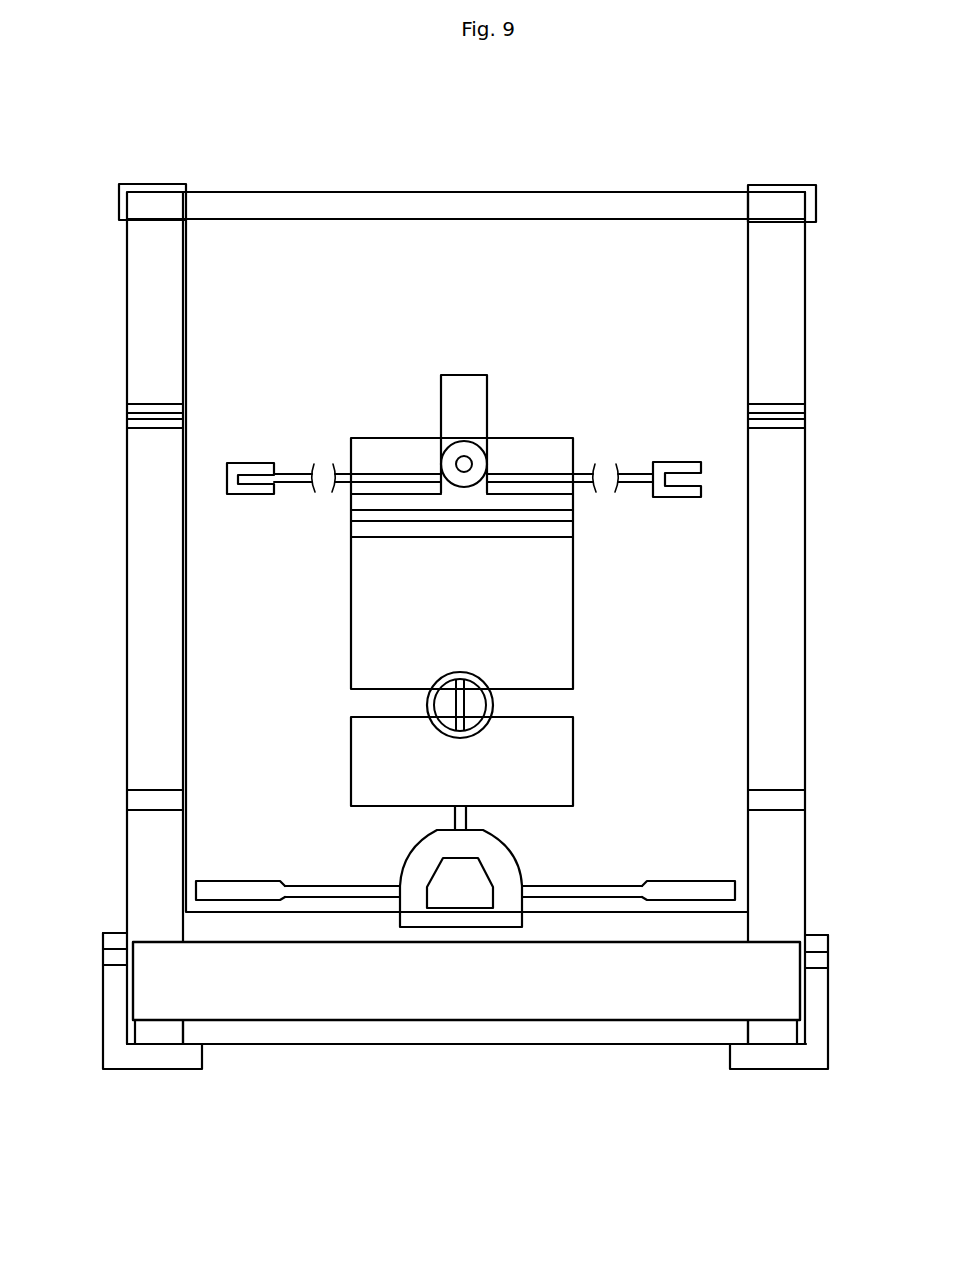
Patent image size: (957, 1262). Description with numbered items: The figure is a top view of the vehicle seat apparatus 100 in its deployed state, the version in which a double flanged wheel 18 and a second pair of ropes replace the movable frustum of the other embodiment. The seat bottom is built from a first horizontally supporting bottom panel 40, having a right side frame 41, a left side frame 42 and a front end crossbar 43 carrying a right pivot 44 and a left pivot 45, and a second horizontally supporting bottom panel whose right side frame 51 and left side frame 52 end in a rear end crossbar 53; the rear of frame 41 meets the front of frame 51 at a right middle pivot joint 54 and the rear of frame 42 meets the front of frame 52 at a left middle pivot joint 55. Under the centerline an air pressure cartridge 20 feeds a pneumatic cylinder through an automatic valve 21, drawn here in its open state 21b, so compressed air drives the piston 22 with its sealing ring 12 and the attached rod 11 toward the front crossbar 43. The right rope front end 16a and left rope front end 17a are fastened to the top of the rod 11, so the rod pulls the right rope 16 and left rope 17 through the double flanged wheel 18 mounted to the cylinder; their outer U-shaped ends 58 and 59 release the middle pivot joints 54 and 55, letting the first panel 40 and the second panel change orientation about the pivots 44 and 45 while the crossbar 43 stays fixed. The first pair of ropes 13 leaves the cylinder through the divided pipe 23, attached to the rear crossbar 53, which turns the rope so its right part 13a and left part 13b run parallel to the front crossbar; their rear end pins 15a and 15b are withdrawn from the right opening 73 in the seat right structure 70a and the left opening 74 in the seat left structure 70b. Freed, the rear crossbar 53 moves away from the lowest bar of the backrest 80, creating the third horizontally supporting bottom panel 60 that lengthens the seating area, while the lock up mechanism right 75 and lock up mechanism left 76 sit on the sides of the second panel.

The vehicle seat apparatus 100 is at (705, 153).
The first horizontally supporting bottom panel 40 is at (230, 292).
The right side frame 41 is at (792, 342).
The left side frame 42 is at (152, 352).
The front end crossbar 43 is at (410, 205).
The right pivot 44 is at (812, 190).
The left pivot 45 is at (122, 190).
The right side frame 51 is at (780, 718).
The left side frame 52 is at (152, 702).
The rear end crossbar 53 is at (380, 930).
The right middle pivot joint 54 is at (790, 412).
The left middle pivot joint 55 is at (140, 412).
The U-shaped right end 58 is at (663, 468).
The U-shaped left end 59 is at (241, 462).
The third horizontally supporting bottom panel 60 is at (274, 987).
The seat right structure 70a is at (795, 1057).
The seat left structure 70b is at (140, 1057).
The right opening 73 is at (820, 962).
The left opening 74 is at (112, 960).
The lock up mechanism right 75 is at (790, 802).
The lock up mechanism left 76 is at (141, 800).
The backrest 80 is at (425, 1030).
The rod 11 is at (476, 406).
The sealing ring 12 is at (574, 518).
The first pair of ropes 13 is at (455, 817).
The right part of the rope 13a is at (575, 890).
The left part of the rope 13b is at (317, 886).
The rear end pin 15a is at (667, 887).
The rear end pin 15b is at (228, 880).
The right rope 16 is at (628, 484).
The right rope front end 16a is at (441, 382).
The left rope 17 is at (293, 484).
The left rope front end 17a is at (487, 382).
The double flanged wheel 18 is at (481, 456).
The air pressure cartridge 20 is at (548, 760).
The automatic valve 21 is at (487, 707).
The open state of the automatic valve 21b is at (455, 689).
The piston 22 is at (385, 534).
The divided pipe 23 is at (500, 872).